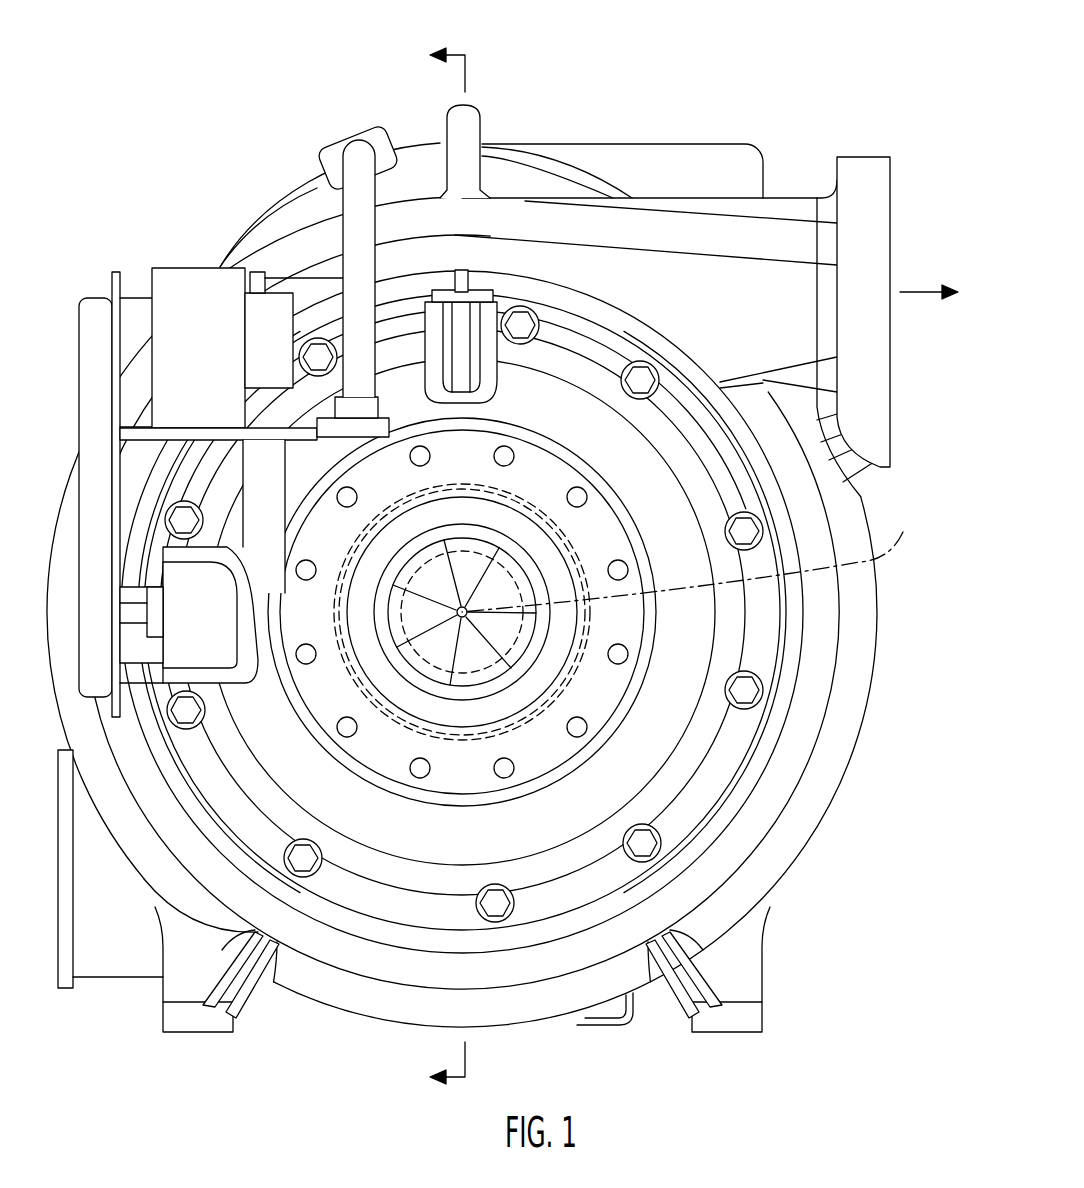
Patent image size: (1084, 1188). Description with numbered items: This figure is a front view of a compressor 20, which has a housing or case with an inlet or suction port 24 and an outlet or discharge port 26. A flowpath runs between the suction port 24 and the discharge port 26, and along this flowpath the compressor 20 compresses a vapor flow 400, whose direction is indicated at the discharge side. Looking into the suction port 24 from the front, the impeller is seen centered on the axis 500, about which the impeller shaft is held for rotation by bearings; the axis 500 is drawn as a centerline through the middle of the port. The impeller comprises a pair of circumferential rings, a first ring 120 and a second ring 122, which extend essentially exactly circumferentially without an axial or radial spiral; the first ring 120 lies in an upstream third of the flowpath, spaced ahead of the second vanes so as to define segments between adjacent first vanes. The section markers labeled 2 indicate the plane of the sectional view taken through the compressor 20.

The compressor 20 is at (462, 568).
The inlet or suction port 24 is at (481, 558).
The outlet or discharge port 26 is at (906, 272).
The first ring 120 is at (455, 548).
The second ring 122 is at (400, 728).
The vapor flow 400 is at (925, 312).
The axis 500 is at (692, 556).
The section line 2- 2 is at (437, 569).